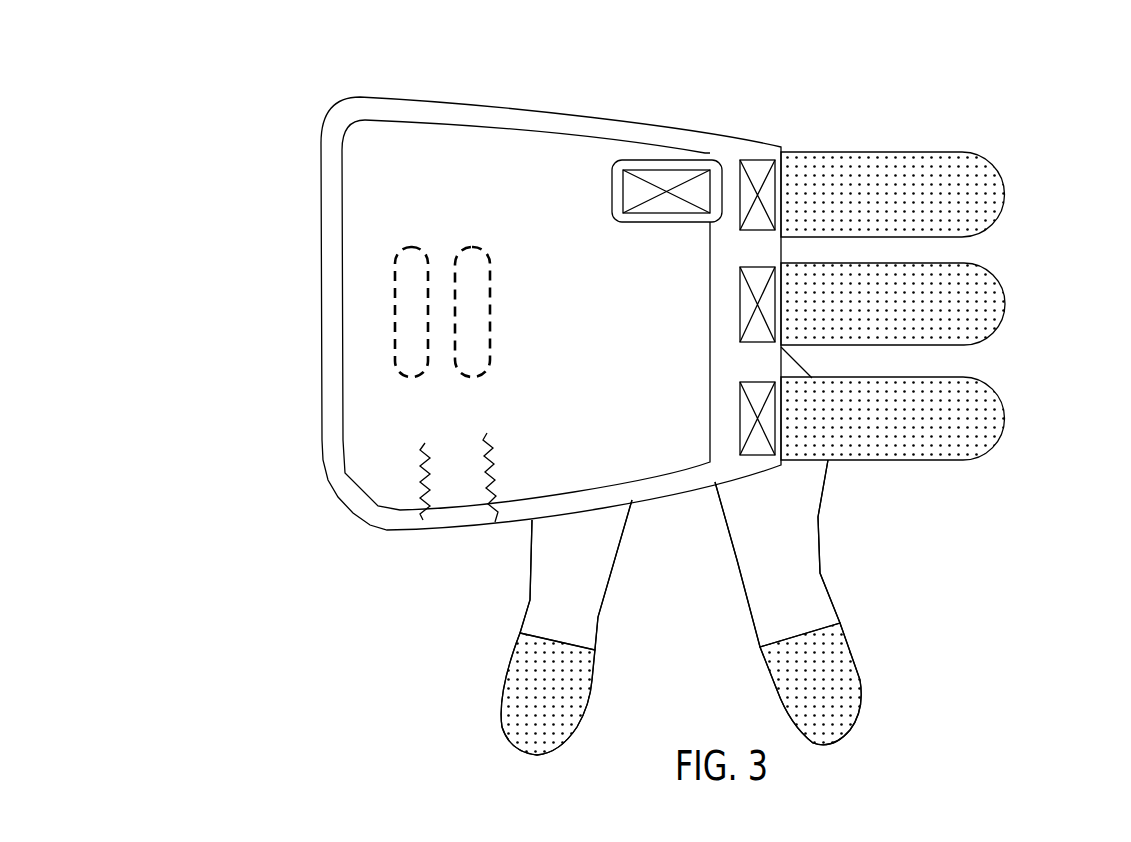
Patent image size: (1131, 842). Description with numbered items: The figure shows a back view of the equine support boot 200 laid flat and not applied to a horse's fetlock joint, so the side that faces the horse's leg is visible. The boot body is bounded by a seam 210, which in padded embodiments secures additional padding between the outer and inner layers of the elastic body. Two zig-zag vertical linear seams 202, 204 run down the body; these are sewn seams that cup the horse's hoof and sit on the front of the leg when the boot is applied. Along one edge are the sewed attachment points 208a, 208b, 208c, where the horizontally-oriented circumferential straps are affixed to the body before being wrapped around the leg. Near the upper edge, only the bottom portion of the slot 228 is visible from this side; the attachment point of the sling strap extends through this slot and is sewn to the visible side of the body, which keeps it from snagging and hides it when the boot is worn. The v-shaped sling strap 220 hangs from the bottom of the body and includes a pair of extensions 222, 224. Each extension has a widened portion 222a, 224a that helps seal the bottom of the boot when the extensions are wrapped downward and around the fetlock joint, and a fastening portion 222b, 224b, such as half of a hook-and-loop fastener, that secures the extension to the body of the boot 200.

The equine support boot 200 is at (250, 306).
The seam 210 is at (440, 125).
The slot 228 is at (666, 158).
The sewed attachment point 208a is at (1005, 190).
The sewed attachment point 208b is at (1005, 297).
The sewed attachment point 208c is at (1005, 403).
The vertical linear seam 202 is at (418, 507).
The vertical linear seam 204 is at (487, 497).
The v-shaped sling strap 220 is at (714, 607).
The extension 222 is at (593, 627).
The widened portion 222a is at (592, 572).
The fastening portion 222b is at (578, 727).
The extension 224 is at (821, 602).
The widened portion 224a is at (792, 545).
The fastening portion 224b is at (863, 703).